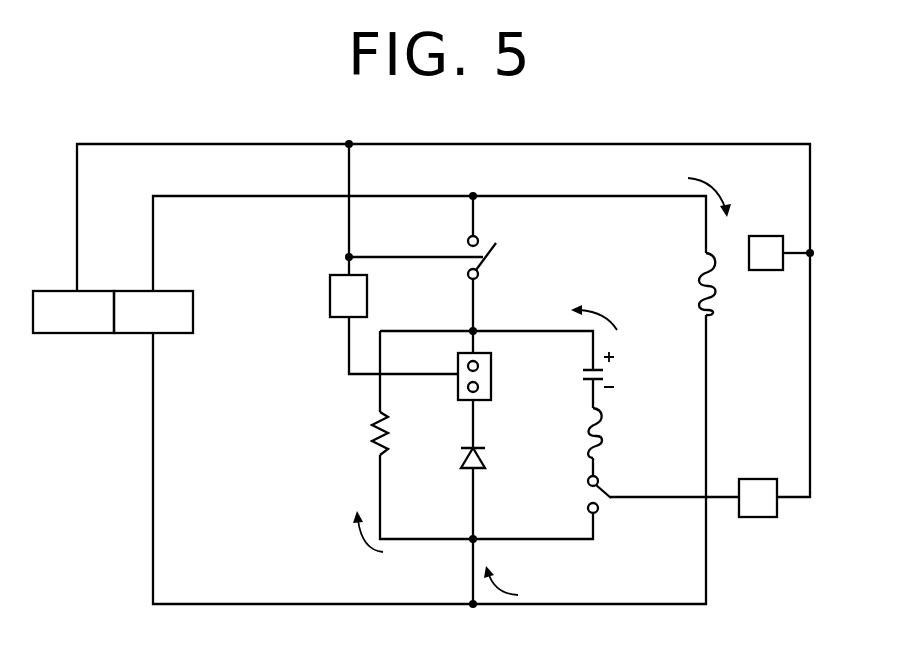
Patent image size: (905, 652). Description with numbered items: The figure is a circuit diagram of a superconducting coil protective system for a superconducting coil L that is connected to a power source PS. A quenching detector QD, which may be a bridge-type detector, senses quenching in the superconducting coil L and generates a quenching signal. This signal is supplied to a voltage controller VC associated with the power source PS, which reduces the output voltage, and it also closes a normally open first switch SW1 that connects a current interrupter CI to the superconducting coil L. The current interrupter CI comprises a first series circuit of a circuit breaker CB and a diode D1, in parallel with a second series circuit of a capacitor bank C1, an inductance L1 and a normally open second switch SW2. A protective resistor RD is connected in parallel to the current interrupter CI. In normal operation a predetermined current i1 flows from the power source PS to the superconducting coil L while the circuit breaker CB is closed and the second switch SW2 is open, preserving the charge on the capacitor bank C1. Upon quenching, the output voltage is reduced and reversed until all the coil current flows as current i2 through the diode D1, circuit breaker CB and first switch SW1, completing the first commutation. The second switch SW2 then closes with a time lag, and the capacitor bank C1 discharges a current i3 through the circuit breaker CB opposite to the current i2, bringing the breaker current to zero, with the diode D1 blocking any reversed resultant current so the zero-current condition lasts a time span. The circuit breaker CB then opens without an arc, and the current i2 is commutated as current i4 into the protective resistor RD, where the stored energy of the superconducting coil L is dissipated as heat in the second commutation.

The voltage controller VC is at (73, 312).
The power source PS is at (153, 312).
The first switch SW1 is at (510, 257).
The circuit breaker CB is at (493, 376).
The protective resistor RD is at (358, 433).
The diode D1 is at (494, 461).
The current interrupter CI is at (553, 436).
The capacitor bank C1 is at (616, 371).
The inductance L1 is at (614, 433).
The second switch SW2 is at (625, 504).
The superconducting coil L is at (717, 284).
The quenching detector QD is at (778, 239).
The predetermined current i1 is at (718, 193).
The commutated current i2 is at (505, 580).
The discharge current i3 is at (602, 312).
The commutated current i4 is at (354, 537).